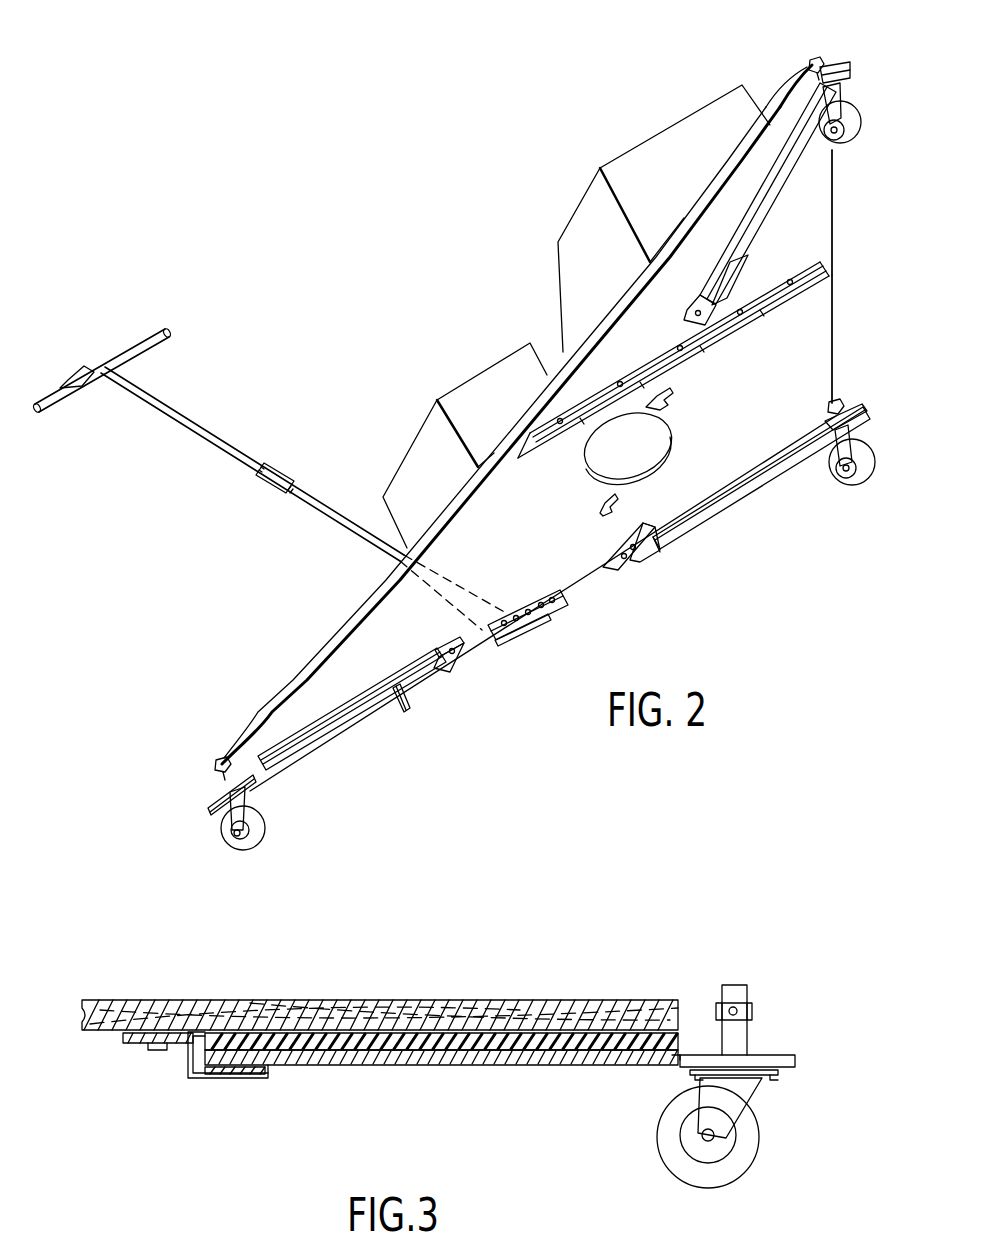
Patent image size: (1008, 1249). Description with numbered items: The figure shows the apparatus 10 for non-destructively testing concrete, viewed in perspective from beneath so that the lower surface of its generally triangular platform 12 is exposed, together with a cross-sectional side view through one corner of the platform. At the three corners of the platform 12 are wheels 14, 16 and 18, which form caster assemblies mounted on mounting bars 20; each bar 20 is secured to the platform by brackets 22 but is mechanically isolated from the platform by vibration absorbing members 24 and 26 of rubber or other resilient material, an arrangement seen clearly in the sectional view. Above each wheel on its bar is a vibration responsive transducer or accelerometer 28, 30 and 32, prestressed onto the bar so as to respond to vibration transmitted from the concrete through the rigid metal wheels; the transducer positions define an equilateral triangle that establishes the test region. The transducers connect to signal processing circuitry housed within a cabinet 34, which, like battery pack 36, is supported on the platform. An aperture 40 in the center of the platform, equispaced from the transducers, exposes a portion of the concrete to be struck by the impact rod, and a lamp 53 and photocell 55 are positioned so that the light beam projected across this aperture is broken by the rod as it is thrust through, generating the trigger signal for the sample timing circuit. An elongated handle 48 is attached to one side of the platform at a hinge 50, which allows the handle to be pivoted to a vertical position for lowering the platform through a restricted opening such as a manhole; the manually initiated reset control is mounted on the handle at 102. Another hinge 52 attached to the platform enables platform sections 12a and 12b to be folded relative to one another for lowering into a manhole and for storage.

In FIG. 2, the apparatus 10 is at (503, 200).
In FIG. 2, the platform 12 is at (370, 590).
In FIG. 3, the platform 12 is at (402, 1015).
In FIG. 2, the platform section 12a is at (808, 322).
In FIG. 2, the platform section 12b is at (812, 233).
In FIG. 2, the wheel 14 is at (262, 832).
In FIG. 3, the wheel 14 is at (753, 1142).
In FIG. 2, the wheel 16 is at (870, 478).
In FIG. 3, the wheel 16 is at (753, 1142).
In FIG. 2, the wheel 18 is at (860, 128).
In FIG. 3, the wheel 18 is at (728, 1170).
In FIG. 2, the mounting bar 20 is at (765, 212).
In FIG. 3, the mounting bar 20 is at (502, 1068).
In FIG. 2, the bracket 22 is at (668, 548).
In FIG. 3, the bracket 22 is at (212, 1080).
In FIG. 2, the vibration absorbing member 24 is at (362, 690).
In FIG. 3, the vibration absorbing member 24 is at (345, 1045).
In FIG. 3, the vibration absorbing member 26 is at (143, 1033).
In FIG. 2, the transducer 28 is at (215, 762).
In FIG. 3, the transducer 28 is at (769, 992).
In FIG. 2, the transducer 30 is at (845, 405).
In FIG. 3, the transducer 30 is at (769, 992).
In FIG. 2, the transducer 32 is at (816, 58).
In FIG. 3, the transducer 32 is at (735, 985).
In FIG. 2, the cabinet 34 is at (680, 138).
In FIG. 2, the battery pack 36 is at (482, 390).
In FIG. 2, the aperture 40 is at (660, 455).
In FIG. 2, the handle 48 is at (220, 440).
In FIG. 2, the hinge 50 is at (545, 618).
In FIG. 2, the hinge 52 is at (742, 327).
In FIG. 2, the lamp 53 is at (618, 509).
In FIG. 2, the photocell 55 is at (672, 395).
In FIG. 2, the reset control mounting location 102 is at (78, 365).